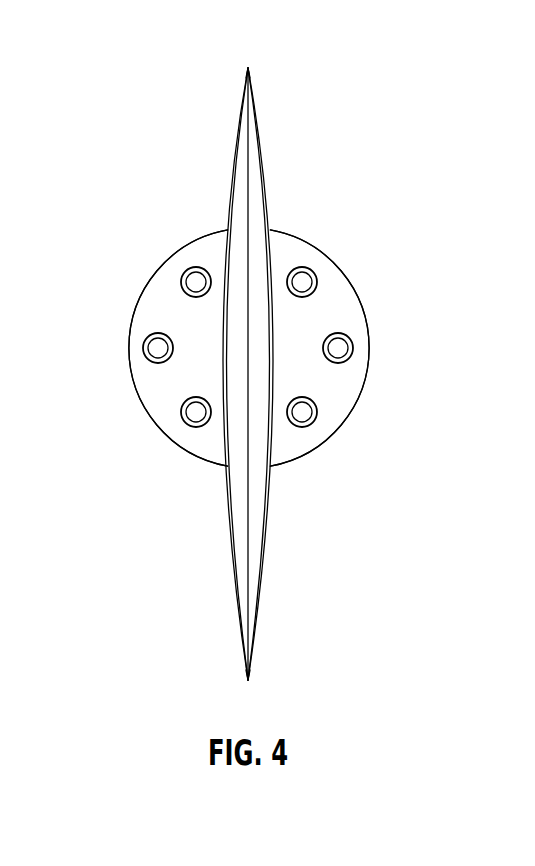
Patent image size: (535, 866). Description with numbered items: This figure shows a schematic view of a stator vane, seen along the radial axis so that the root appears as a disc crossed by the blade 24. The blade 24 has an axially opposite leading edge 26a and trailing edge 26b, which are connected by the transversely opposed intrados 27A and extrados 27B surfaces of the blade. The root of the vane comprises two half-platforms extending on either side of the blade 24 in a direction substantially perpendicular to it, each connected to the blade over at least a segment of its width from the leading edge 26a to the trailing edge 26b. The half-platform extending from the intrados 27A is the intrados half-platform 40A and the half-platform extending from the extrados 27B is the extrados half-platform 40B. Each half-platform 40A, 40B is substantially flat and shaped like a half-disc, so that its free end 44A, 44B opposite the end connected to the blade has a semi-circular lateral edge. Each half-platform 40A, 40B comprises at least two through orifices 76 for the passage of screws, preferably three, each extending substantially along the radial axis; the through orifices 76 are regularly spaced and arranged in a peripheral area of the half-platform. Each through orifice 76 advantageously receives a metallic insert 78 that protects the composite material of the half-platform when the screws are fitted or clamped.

The blade 24 is at (249, 573).
The leading edge 26a is at (248, 68).
The trailing edge 26b is at (250, 681).
The intrados 27A is at (240, 560).
The extrados 27B is at (255, 517).
The intrados half-platform 40A is at (147, 382).
The extrados half-platform 40B is at (327, 389).
The free end of intrados half-platform 44A is at (147, 313).
The free end of extrados half-platform 44B is at (328, 298).
The through orifice 76 is at (302, 282).
The metallic insert 78 is at (182, 273).